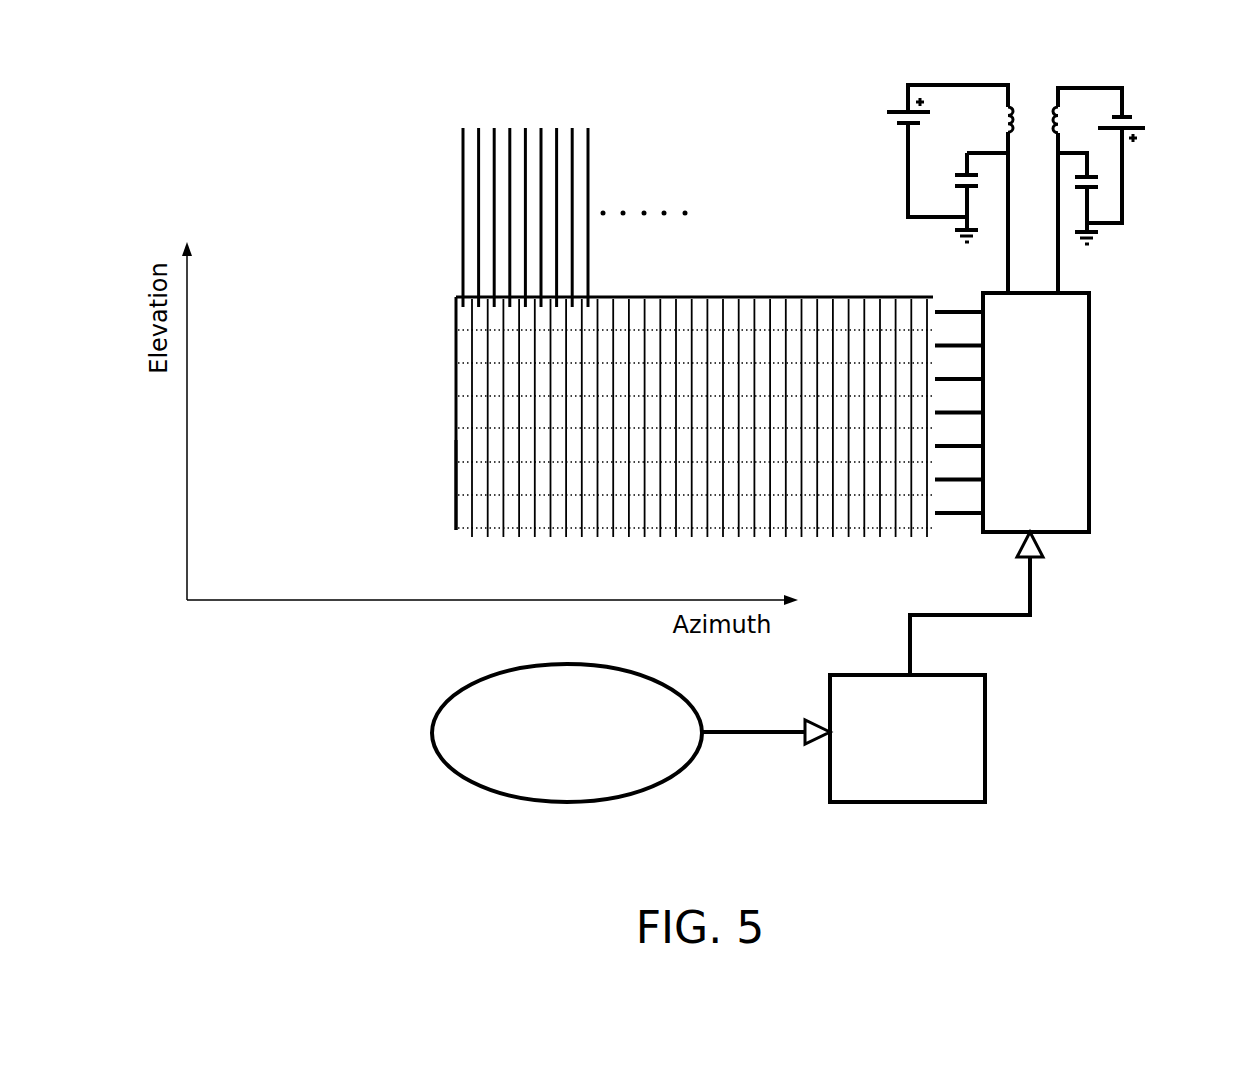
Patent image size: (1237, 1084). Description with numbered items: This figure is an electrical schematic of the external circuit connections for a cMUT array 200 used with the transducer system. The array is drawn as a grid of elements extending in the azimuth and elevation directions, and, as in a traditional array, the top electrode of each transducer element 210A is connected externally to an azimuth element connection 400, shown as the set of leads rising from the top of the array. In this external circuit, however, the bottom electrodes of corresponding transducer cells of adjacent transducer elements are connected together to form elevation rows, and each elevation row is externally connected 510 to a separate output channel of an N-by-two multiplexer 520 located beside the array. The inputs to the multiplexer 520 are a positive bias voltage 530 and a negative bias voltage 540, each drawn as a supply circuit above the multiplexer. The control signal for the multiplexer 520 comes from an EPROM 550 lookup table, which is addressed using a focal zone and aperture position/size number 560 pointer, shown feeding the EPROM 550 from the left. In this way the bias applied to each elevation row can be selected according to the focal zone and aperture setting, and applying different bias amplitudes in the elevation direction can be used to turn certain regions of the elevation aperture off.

The cMUT array 200 is at (394, 369).
The transducer element 210A is at (456, 530).
The azimuth element connection 400 is at (426, 208).
The external connection 510 is at (957, 300).
The N by 2 multiplexer 520 is at (1058, 487).
The positive bias voltage 530 is at (947, 140).
The negative bias voltage 540 is at (1083, 140).
The EPROM 550 is at (943, 777).
The focal zone and aperture position/size number 560 is at (462, 752).